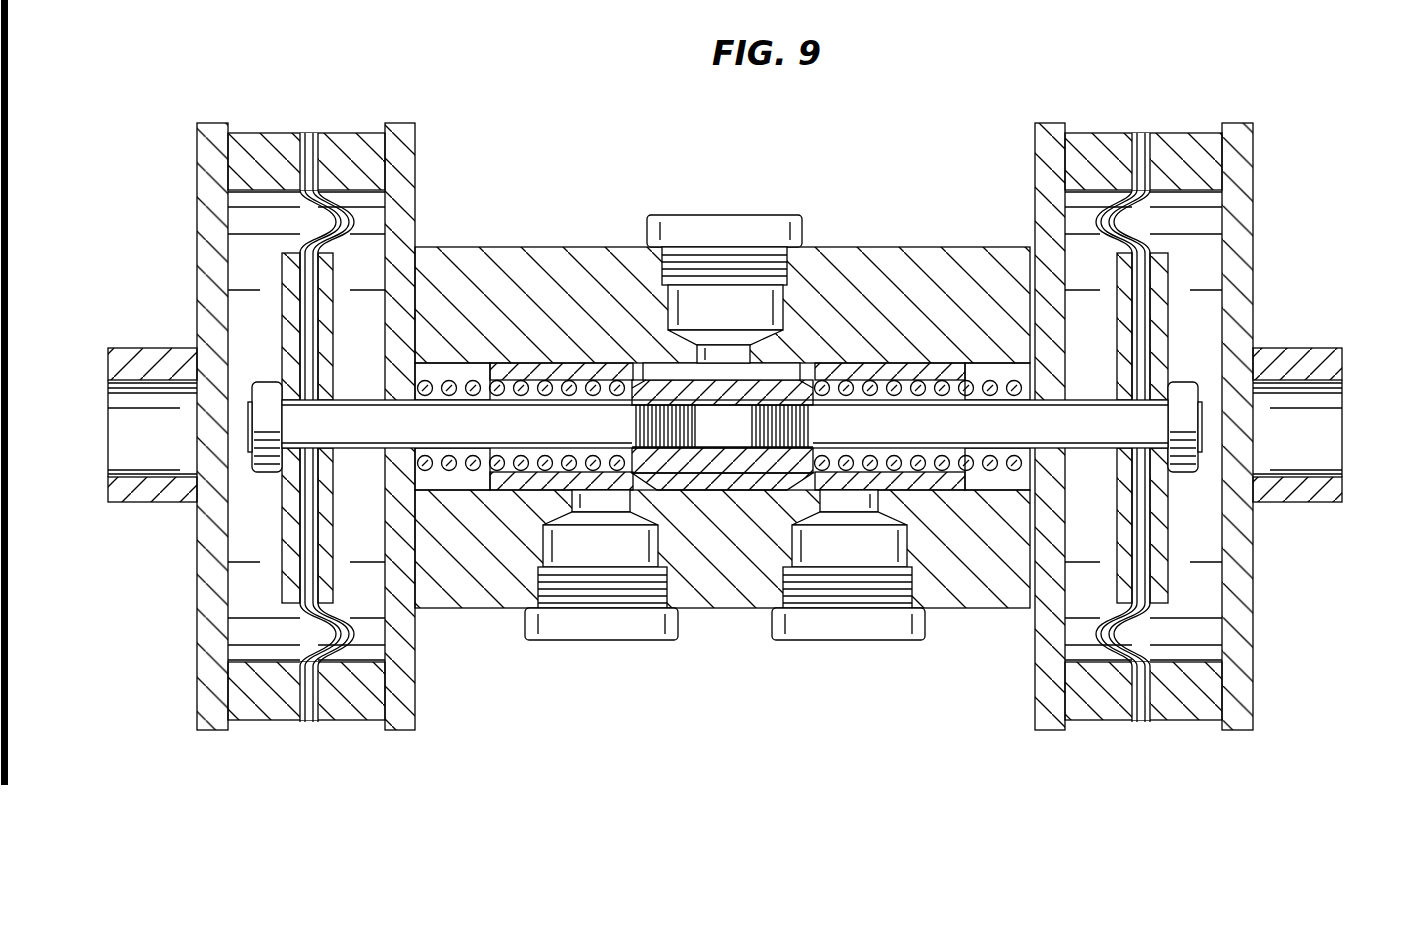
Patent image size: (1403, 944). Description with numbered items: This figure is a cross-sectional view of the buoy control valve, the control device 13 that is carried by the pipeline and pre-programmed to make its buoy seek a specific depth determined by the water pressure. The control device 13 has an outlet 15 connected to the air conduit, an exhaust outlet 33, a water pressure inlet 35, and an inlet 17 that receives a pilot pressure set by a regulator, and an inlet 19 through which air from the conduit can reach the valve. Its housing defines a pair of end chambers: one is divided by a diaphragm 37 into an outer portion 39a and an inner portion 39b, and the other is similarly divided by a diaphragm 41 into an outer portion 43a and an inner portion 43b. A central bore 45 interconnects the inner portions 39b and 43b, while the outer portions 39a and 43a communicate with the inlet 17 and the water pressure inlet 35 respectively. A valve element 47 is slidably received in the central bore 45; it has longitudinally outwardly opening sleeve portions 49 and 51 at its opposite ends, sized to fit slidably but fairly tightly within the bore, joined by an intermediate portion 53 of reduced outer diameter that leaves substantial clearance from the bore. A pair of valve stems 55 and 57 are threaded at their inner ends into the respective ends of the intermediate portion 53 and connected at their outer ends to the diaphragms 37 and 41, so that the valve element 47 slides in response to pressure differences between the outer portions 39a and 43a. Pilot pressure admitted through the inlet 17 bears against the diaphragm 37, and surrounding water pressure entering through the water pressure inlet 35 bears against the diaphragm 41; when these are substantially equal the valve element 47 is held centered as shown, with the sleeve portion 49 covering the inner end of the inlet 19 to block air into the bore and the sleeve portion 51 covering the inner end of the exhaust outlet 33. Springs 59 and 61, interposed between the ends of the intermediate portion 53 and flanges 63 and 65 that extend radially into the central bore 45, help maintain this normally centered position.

The control device 13 is at (862, 212).
The outlet 15 is at (678, 230).
The inlet 17 is at (133, 497).
The inlet 19 is at (607, 627).
The exhaust outlet 33 is at (860, 627).
The water pressure inlet 35 is at (1330, 350).
The diaphragm 37 is at (298, 560).
The outer portion 39a is at (247, 278).
The inner portion 39b is at (373, 273).
The diaphragm 41 is at (1152, 560).
The outer portion 43a is at (1202, 272).
The inner portion 43b is at (1082, 255).
The central bore 45 is at (452, 488).
The valve element 47 is at (655, 463).
The sleeve portion 49 is at (530, 478).
The sleeve portion 51 is at (945, 478).
The intermediate portion 53 is at (745, 455).
The valve stem 55 is at (458, 416).
The valve stem 57 is at (862, 415).
The spring 59 is at (570, 385).
The spring 61 is at (928, 385).
The flange 63 is at (398, 377).
The flange 65 is at (1055, 378).